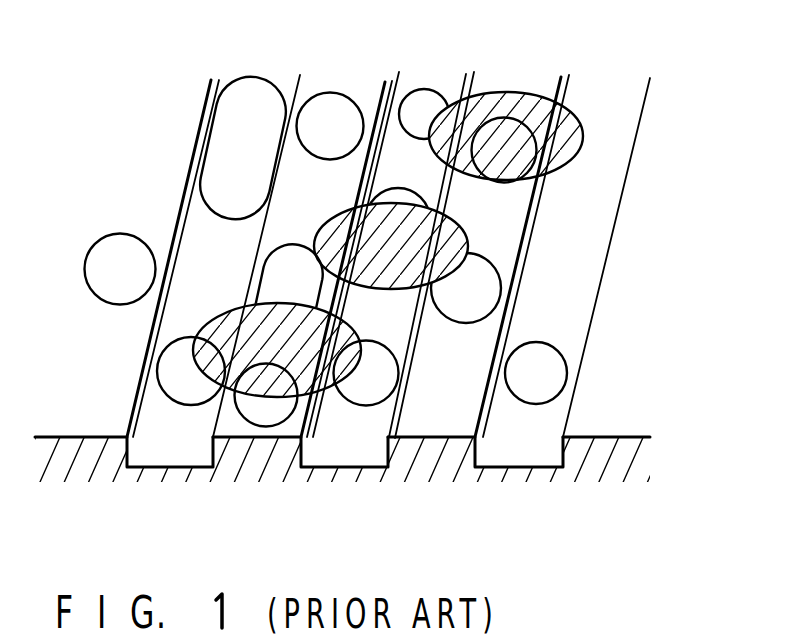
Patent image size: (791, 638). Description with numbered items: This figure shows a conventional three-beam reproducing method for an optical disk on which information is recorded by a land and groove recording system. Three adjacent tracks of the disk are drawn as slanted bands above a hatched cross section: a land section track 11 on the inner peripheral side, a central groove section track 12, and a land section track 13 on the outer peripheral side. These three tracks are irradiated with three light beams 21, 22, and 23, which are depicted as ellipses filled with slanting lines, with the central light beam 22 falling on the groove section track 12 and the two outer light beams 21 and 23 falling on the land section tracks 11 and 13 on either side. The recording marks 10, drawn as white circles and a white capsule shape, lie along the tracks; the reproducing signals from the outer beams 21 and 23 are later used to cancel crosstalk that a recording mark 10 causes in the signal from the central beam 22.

The recording mark 10 is at (249, 76).
The land section track 11 is at (210, 483).
The central groove section track 12 is at (385, 483).
The land section track 13 is at (472, 483).
The light beam 21 is at (219, 316).
The light beam 22 is at (324, 226).
The light beam 23 is at (527, 92).